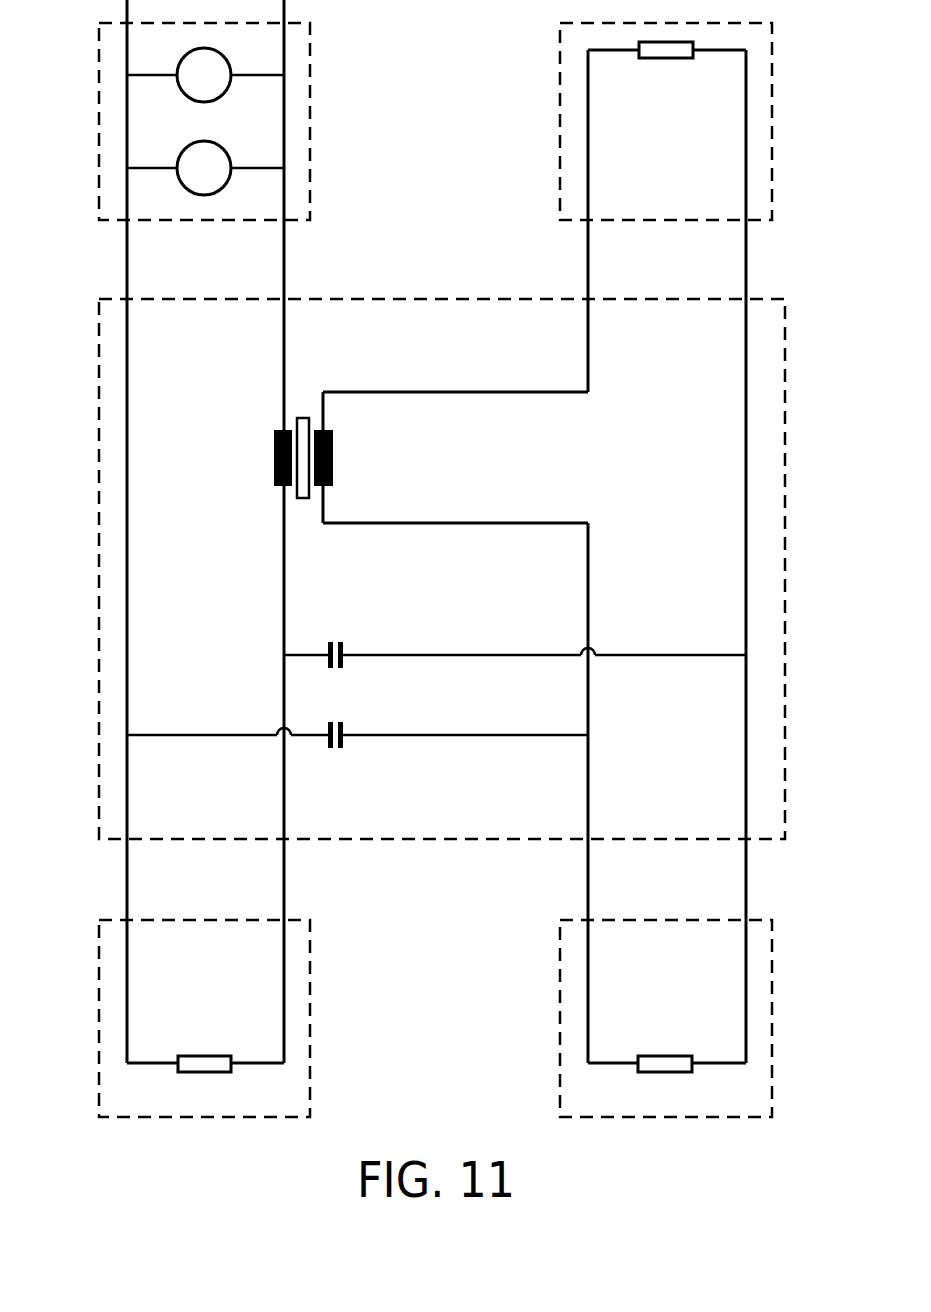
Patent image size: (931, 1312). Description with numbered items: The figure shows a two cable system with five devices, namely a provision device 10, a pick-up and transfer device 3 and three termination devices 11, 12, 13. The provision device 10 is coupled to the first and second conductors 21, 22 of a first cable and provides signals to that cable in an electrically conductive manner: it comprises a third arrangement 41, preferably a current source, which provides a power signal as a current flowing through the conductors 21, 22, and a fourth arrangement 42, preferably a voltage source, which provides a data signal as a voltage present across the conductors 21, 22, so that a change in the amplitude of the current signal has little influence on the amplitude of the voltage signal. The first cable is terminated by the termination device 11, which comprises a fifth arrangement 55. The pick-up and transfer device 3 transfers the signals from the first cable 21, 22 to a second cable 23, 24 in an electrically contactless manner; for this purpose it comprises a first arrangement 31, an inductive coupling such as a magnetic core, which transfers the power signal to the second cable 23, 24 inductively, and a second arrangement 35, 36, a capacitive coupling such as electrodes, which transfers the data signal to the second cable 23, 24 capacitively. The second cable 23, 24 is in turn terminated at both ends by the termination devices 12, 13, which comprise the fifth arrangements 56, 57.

The pick-up and transfer device 3 is at (99, 560).
The provision device 10 is at (99, 120).
The termination device 11 is at (99, 1025).
The termination device 12 is at (560, 120).
The termination device 13 is at (560, 1025).
The first conductor 21 is at (127, 266).
The second conductor 22 is at (284, 266).
The conductor of second cable 23 is at (588, 266).
The conductor of second cable 24 is at (746, 266).
The first arrangement 31 is at (333, 458).
The second arrangement 35 is at (337, 636).
The second arrangement 36 is at (337, 750).
The third arrangement 41 is at (222, 58).
The fourth arrangement 42 is at (222, 151).
The fifth arrangement 55 is at (208, 1055).
The fifth arrangement 56 is at (665, 60).
The fifth arrangement 57 is at (669, 1055).